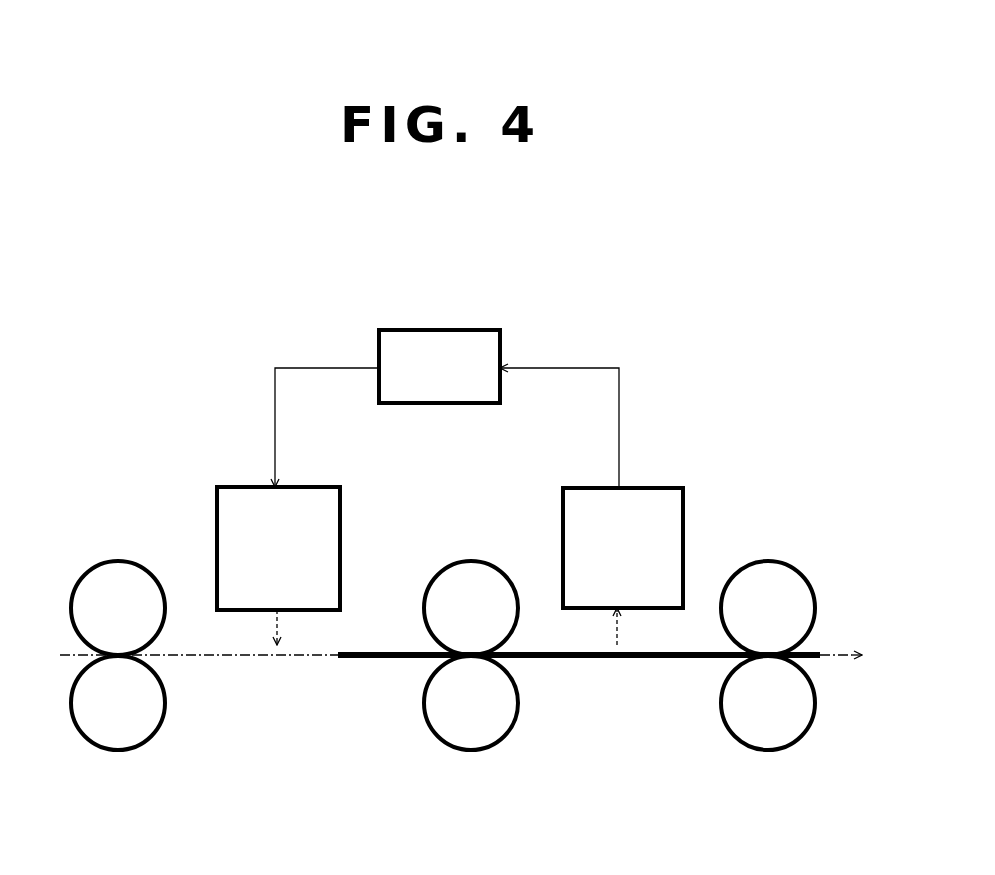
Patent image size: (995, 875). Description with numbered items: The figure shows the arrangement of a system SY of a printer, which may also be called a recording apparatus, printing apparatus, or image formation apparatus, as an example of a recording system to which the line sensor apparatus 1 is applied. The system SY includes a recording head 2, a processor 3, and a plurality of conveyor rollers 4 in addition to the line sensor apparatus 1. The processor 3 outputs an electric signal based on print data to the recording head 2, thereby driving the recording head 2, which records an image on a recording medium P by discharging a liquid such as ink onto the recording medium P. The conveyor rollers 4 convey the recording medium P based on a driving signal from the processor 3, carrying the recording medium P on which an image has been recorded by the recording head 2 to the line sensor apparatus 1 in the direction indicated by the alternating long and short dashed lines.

The system SY is at (117, 352).
The line sensor apparatus 1 is at (675, 488).
The recording head 2 is at (227, 487).
The processor 3 is at (420, 330).
The conveyor rollers 4 is at (90, 568).
The recording medium P is at (355, 662).